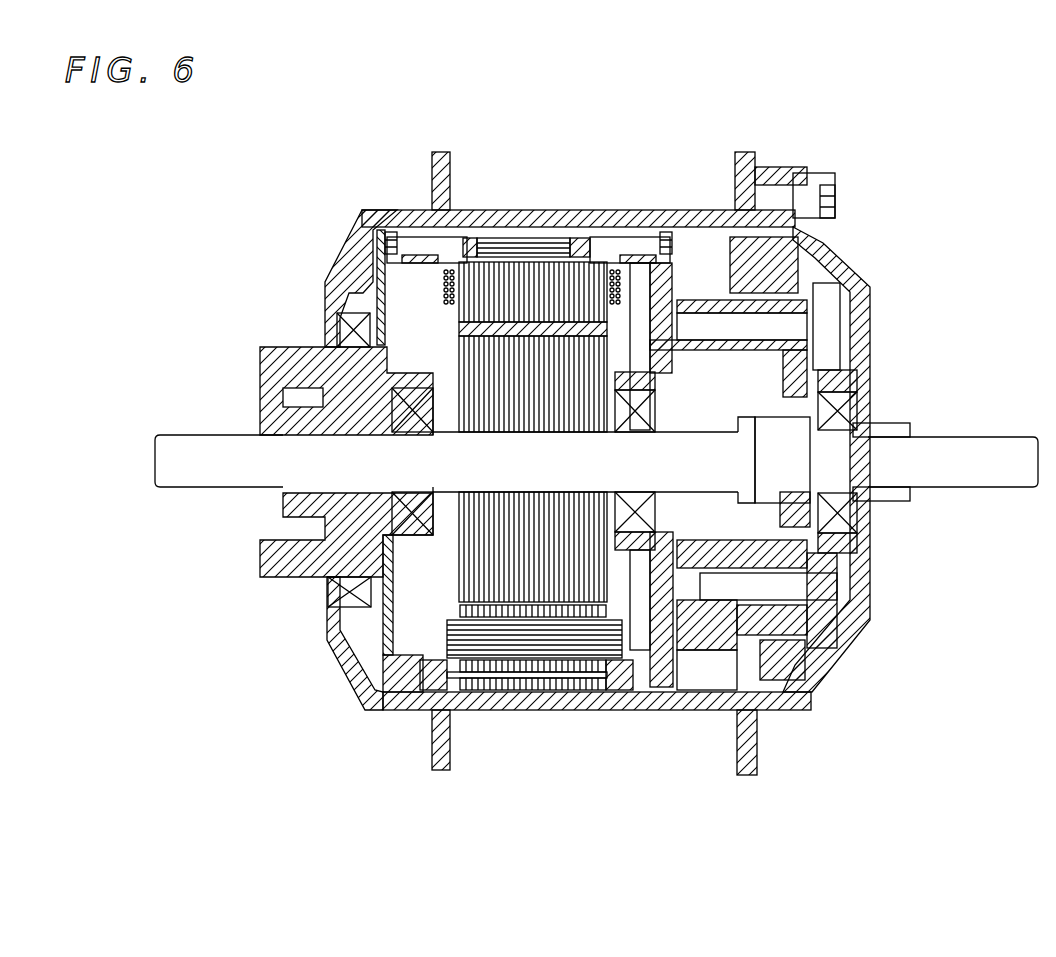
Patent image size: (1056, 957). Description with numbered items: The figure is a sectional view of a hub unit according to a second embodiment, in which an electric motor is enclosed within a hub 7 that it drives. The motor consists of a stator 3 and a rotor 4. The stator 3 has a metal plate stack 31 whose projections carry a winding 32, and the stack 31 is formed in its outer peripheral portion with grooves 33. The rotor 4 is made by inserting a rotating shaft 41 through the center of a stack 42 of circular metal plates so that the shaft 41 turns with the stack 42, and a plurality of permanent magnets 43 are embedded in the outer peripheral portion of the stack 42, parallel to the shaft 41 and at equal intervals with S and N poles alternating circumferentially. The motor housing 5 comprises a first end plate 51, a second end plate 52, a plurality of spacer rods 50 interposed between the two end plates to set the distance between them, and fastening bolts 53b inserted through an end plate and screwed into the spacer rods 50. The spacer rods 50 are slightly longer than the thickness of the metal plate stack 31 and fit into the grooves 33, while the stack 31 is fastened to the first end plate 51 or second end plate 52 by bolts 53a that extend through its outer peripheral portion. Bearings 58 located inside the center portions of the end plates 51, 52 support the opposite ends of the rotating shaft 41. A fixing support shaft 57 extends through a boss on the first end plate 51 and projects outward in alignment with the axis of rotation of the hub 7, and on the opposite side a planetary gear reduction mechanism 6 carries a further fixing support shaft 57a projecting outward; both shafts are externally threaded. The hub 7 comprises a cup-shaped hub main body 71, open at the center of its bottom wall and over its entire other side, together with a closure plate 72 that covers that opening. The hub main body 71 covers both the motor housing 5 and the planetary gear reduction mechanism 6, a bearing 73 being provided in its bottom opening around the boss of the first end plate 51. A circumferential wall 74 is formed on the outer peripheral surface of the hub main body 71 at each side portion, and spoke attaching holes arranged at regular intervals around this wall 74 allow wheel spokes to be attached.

The stator 3 is at (568, 458).
The metal plate stack 31 is at (545, 692).
The winding 32 is at (583, 657).
The grooves 33 is at (513, 262).
The rotor 4 is at (341, 356).
The rotating shaft 41 is at (433, 460).
The metal plate stack 42 is at (452, 356).
The permanent magnets 43 is at (385, 262).
The motor housing 5 is at (597, 542).
The first end plate 51 is at (395, 692).
The second end plate 52 is at (656, 692).
The bolts 53a is at (493, 673).
The fastening bolts 53b is at (408, 247).
The spacer rods 50 is at (535, 243).
The fixing support shaft 57 is at (212, 465).
The fixing support shaft 57a is at (960, 448).
The bearings 58 is at (407, 523).
The planetary gear reduction mechanism 6 is at (738, 503).
The hub 7 is at (734, 303).
The hub main body 71 is at (617, 205).
The closure plate 72 is at (848, 250).
The bearing 73 is at (330, 635).
The circumferential wall 74 is at (450, 168).